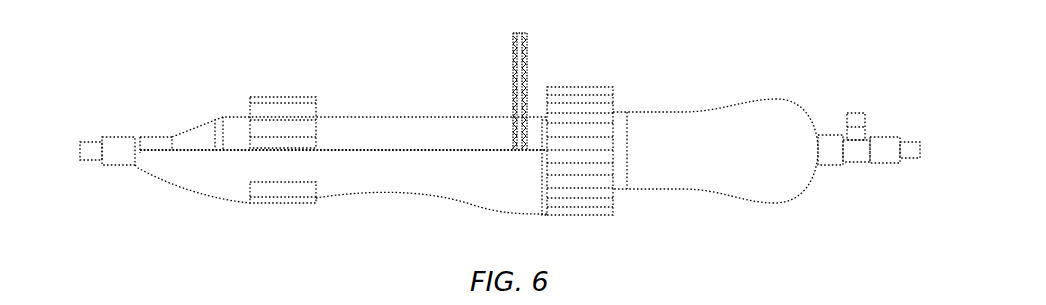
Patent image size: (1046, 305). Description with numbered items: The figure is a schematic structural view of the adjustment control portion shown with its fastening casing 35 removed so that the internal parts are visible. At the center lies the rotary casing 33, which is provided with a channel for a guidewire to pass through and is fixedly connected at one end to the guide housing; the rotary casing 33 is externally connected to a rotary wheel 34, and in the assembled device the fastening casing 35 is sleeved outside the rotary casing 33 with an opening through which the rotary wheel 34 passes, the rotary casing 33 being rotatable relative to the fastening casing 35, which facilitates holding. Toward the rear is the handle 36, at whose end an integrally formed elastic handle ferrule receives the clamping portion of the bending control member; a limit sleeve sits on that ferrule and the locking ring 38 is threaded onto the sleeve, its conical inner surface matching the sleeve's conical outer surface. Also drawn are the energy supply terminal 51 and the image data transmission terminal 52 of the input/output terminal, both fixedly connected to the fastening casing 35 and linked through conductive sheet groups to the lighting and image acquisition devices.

The rotary casing 33 is at (362, 127).
The rotary wheel 34 is at (272, 100).
The fastening casing 35 is at (350, 183).
The handle 36 is at (698, 128).
The locking ring 38 is at (598, 97).
The energy supply terminal 51 is at (517, 52).
The image data transmission terminal 52 is at (523, 48).